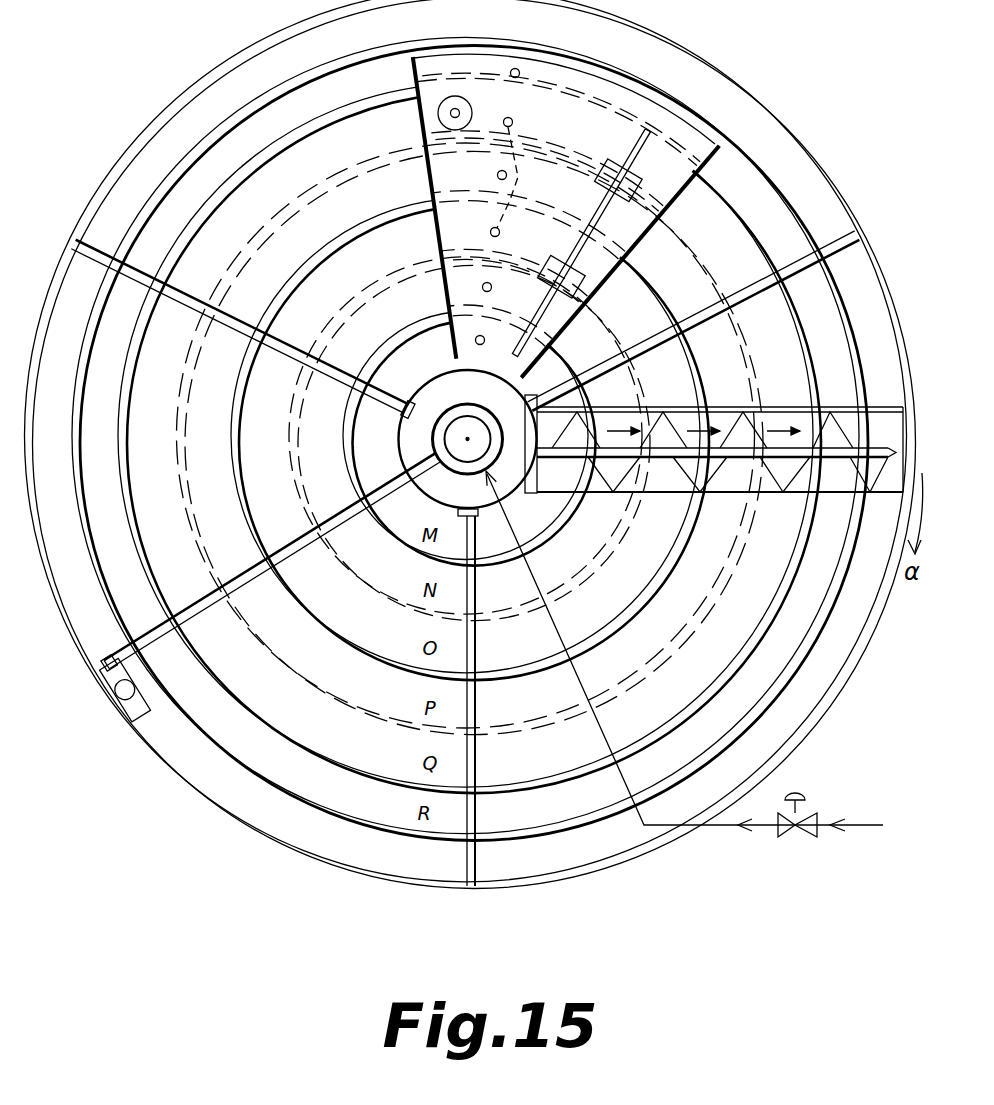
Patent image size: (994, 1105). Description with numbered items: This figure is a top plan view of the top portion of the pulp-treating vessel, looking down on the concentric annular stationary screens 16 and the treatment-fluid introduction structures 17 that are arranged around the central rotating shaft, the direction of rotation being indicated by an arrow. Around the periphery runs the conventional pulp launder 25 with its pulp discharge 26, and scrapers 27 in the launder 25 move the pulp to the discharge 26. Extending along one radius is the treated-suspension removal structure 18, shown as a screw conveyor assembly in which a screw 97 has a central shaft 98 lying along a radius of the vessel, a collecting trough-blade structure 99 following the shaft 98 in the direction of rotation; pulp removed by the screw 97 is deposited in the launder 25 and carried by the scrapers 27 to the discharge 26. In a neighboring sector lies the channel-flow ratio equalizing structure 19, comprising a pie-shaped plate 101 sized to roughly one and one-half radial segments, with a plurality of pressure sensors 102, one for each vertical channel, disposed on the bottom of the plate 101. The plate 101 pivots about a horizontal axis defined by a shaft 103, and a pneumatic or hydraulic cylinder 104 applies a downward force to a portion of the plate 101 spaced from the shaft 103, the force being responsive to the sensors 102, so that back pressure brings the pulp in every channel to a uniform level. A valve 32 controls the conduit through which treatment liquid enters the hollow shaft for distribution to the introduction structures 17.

The channel-flow ratio equalizing structure 19 is at (716, 78).
The treated-suspension removal structure 18 is at (860, 372).
The pulp launder 25 is at (60, 272).
The scrapers 27 is at (98, 668).
The pulp discharge 26 is at (113, 700).
The annular stationary screens 16 is at (185, 472).
The treatment-fluid introduction structures 17 is at (250, 543).
The collecting trough-blade structure 99 is at (770, 410).
The central shaft of screw 98 is at (890, 412).
The screw 97 is at (865, 493).
The plate 101 is at (698, 178).
The pressure sensors 102 is at (520, 192).
The shaft 103 is at (597, 226).
The pneumatic or hydraulic cylinder 104 is at (440, 112).
The valve 32 is at (812, 800).